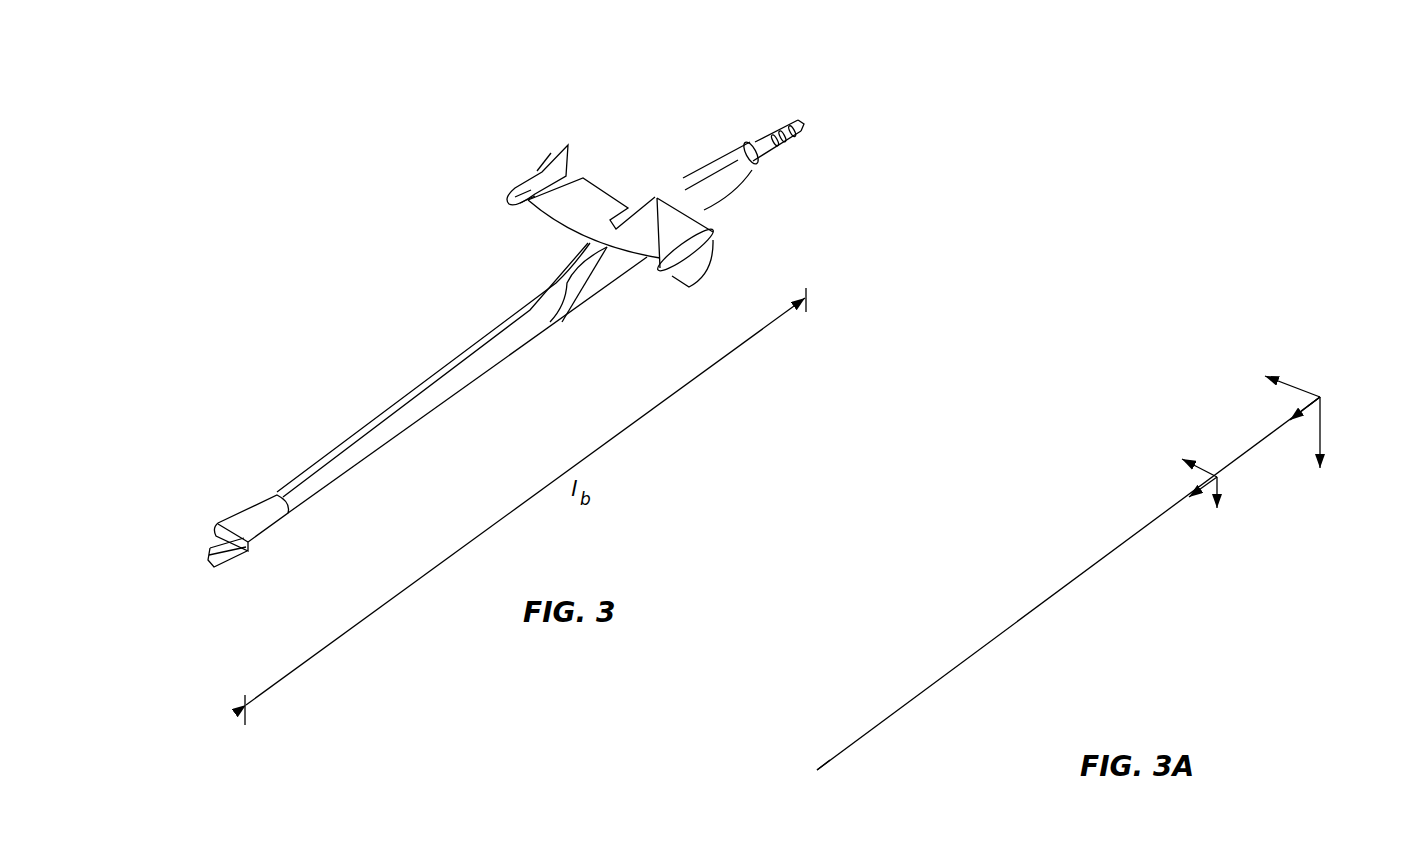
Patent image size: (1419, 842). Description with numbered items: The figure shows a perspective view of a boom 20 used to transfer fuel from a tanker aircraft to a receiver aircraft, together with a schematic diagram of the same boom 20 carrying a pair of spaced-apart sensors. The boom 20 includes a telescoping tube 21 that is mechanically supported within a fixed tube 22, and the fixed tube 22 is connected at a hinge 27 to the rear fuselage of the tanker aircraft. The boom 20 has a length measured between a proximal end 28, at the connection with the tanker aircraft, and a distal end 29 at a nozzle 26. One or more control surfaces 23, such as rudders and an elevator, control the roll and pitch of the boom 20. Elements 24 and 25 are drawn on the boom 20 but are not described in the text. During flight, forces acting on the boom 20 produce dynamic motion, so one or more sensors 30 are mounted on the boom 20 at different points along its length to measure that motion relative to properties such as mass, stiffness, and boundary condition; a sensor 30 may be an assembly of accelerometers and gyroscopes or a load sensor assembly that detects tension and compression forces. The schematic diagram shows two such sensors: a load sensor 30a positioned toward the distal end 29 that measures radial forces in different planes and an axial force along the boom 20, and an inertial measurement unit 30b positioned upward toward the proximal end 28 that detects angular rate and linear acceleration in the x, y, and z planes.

In FIG. 3, the boom 20 is at (316, 239).
In FIG. 3A, the boom 20 is at (970, 657).
In FIG. 3, the telescoping tube 21 is at (740, 147).
In FIG. 3, the fixed tube 22 is at (452, 385).
In FIG. 3, the control surfaces 23 is at (703, 257).
In FIG. 3, the paddle 24 is at (557, 160).
In FIG. 3, the mounting plate 25 is at (568, 210).
In FIG. 3, the nozzle 26 is at (805, 132).
In FIG. 3, the hinge 27 is at (208, 553).
In FIG. 3, the proximal end 28 is at (220, 523).
In FIG. 3A, the proximal end 28 is at (820, 768).
In FIG. 3, the distal end 29 is at (805, 124).
In FIG. 3A, the distal end 29 is at (1325, 393).
In FIG. 3, the sensors 30 is at (683, 173).
In FIG. 3A, the load sensor 30a is at (1320, 397).
In FIG. 3A, the inertial measurement unit 30b is at (1217, 477).